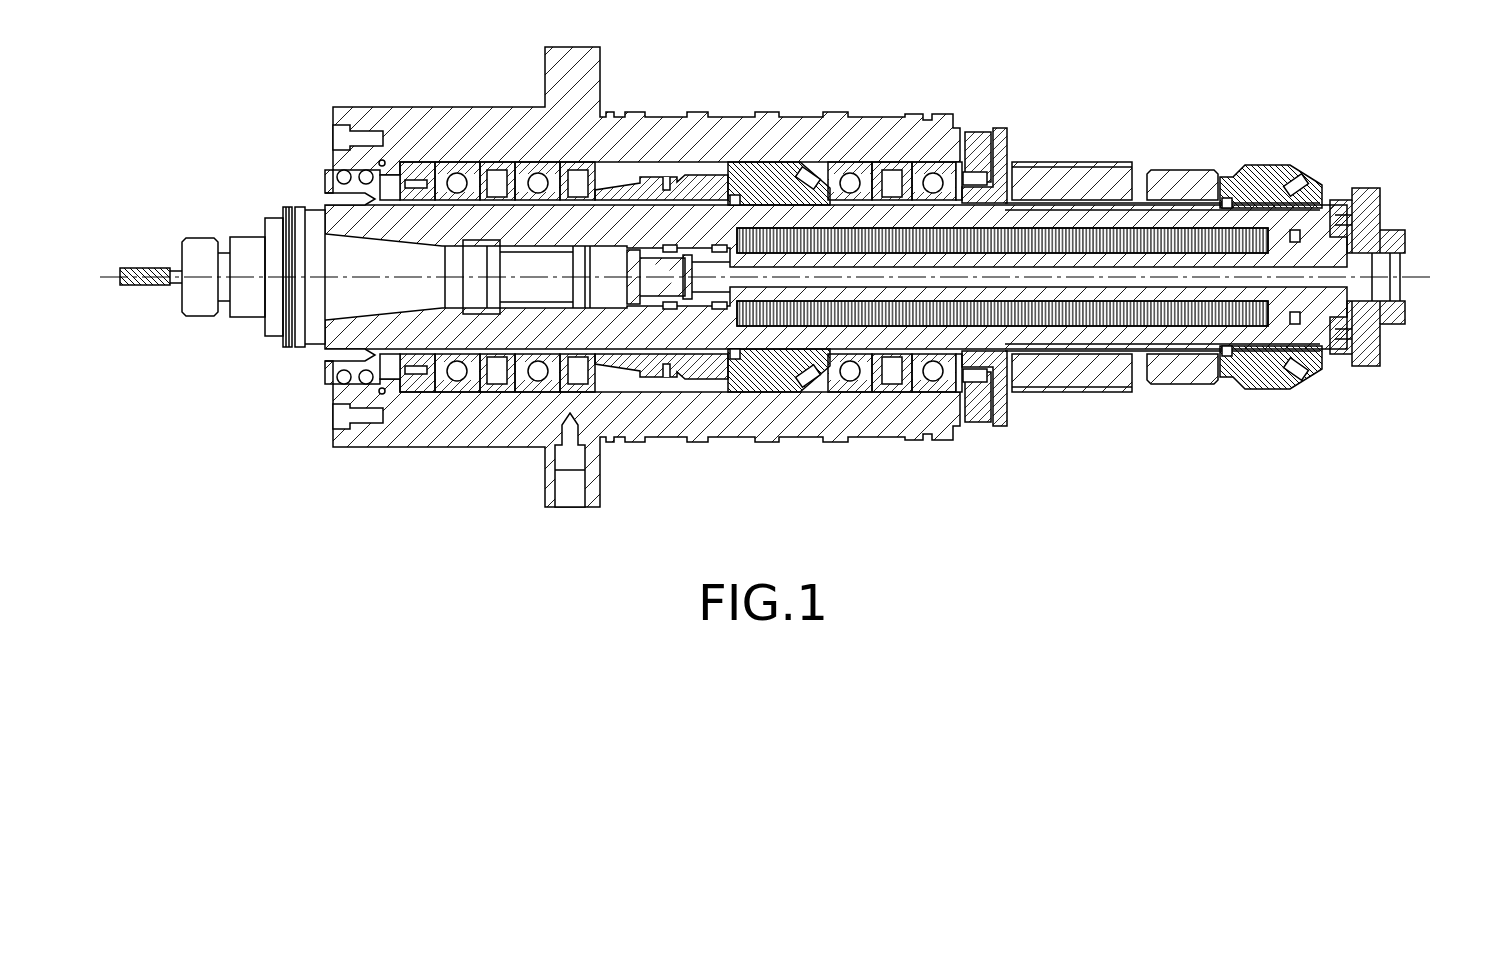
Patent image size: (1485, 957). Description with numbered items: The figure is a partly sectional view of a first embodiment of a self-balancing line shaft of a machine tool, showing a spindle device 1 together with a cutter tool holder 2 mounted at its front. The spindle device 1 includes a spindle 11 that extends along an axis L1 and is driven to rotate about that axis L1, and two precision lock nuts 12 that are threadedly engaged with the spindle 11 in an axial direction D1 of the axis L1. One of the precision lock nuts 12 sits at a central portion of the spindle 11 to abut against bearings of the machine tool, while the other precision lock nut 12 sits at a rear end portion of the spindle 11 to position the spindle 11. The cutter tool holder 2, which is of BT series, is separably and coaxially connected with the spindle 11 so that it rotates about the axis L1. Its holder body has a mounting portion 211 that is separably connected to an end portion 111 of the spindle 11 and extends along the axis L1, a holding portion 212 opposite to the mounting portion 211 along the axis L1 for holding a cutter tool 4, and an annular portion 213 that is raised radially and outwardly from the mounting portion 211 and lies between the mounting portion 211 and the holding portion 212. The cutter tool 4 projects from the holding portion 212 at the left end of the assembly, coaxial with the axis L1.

The spindle device 1 is at (807, 116).
The spindle 11 is at (1062, 203).
The end portion of the spindle 111 is at (390, 218).
The precision lock nut 12 is at (740, 168).
The cutter tool holder 2 is at (248, 232).
The mounting portion 211 is at (412, 312).
The holding portion 212 is at (250, 318).
The annular portion 213 is at (277, 336).
The cutter tool 4 is at (143, 268).
The axis L1 is at (784, 278).
The axial direction D1 is at (1005, 68).